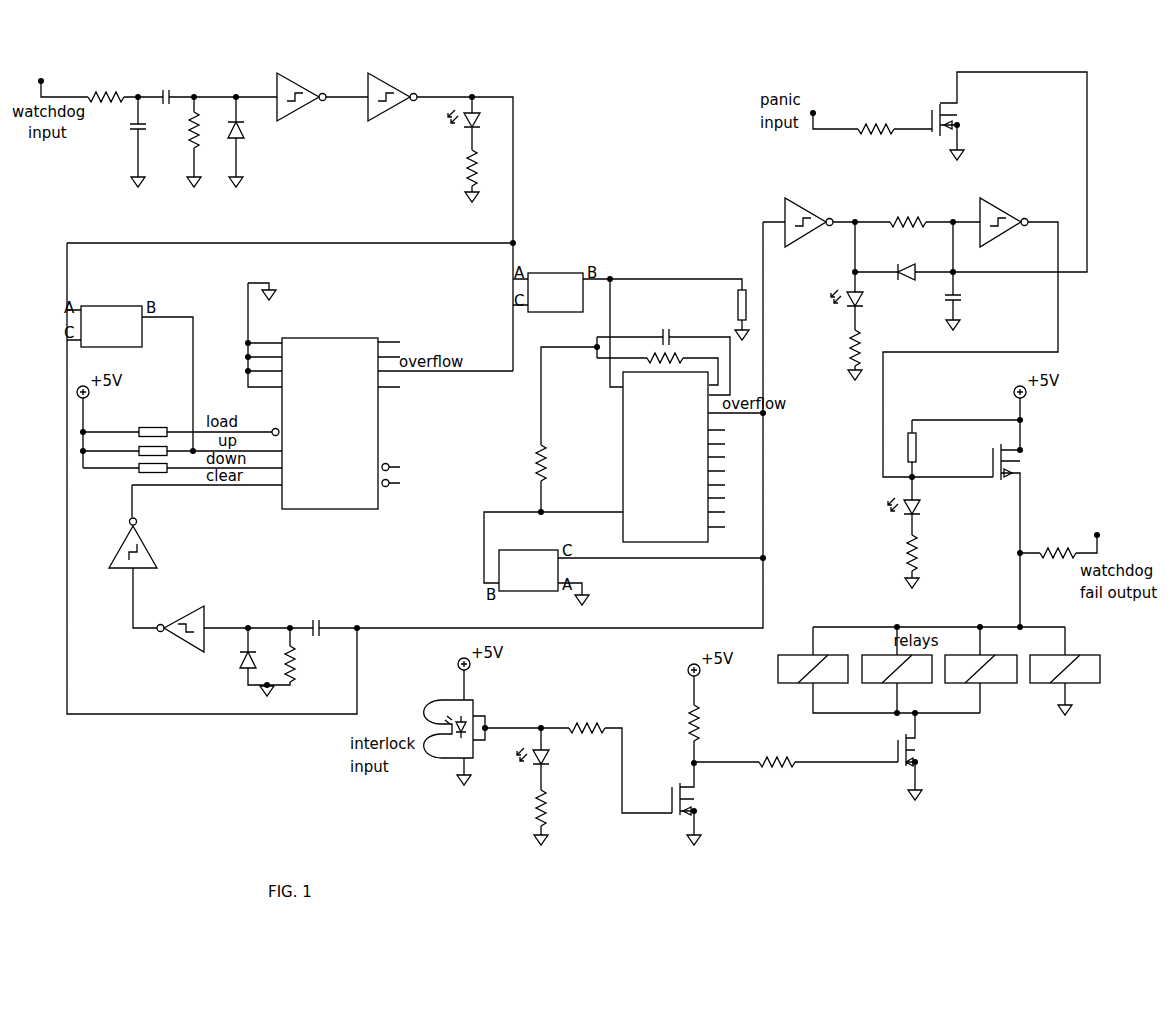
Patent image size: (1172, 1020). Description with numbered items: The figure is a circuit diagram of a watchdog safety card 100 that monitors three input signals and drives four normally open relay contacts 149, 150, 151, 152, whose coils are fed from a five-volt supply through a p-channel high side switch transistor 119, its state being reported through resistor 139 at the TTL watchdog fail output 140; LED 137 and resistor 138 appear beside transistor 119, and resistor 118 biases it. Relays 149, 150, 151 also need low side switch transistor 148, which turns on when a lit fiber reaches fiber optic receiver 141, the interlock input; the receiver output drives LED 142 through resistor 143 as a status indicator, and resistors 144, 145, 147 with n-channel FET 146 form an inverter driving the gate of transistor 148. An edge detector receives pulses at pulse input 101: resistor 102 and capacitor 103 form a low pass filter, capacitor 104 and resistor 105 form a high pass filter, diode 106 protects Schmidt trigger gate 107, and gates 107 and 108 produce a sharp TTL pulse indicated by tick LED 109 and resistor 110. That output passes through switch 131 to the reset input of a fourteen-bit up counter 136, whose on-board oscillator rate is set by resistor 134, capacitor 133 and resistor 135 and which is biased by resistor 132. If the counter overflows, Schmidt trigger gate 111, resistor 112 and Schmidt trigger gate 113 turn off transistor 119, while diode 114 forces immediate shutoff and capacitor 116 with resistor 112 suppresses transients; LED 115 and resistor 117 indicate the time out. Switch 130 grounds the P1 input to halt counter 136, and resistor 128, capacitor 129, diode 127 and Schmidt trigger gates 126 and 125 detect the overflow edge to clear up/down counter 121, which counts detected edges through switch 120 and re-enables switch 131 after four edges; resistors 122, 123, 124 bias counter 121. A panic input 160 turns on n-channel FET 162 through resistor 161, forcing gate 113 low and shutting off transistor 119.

The watchdog safety card 100 is at (205, 813).
The pulse input 101 is at (44, 74).
The resistor 102 is at (107, 88).
The capacitor 103 is at (126, 130).
The capacitor 104 is at (170, 88).
The resistor 105 is at (186, 131).
The diode 106 is at (249, 138).
The Schmidt trigger gate 107 is at (296, 113).
The Schmidt trigger gate 108 is at (391, 113).
The tick LED 109 is at (478, 123).
The resistor 110 is at (462, 168).
The Schmidt trigger gate 111 is at (783, 204).
The resistor 112 is at (907, 211).
The Schmidt trigger gate 113 is at (1015, 209).
The diode 114 is at (906, 283).
The LED 115 is at (846, 288).
The capacitor 116 is at (968, 301).
The resistor 117 is at (846, 345).
The resistor 118 is at (917, 447).
The transistor 119 is at (1022, 461).
The switch 120 is at (123, 305).
The up/down counter 121 is at (343, 337).
The resistor 122 is at (137, 437).
The resistor 123 is at (137, 453).
The resistor 124 is at (137, 483).
The Schmidt trigger gate 125 is at (112, 551).
The Schmidt trigger gate 126 is at (186, 605).
The diode 127 is at (238, 673).
The resistor 128 is at (302, 666).
The capacitor 129 is at (318, 616).
The switch 130 is at (535, 549).
The switch 131 is at (568, 272).
The resistor 132 is at (736, 303).
The capacitor 133 is at (664, 329).
The resistor 134 is at (690, 357).
The resistor 135 is at (532, 463).
The 14-bit up counter 136 is at (618, 451).
The LED 137 is at (924, 511).
The resistor 138 is at (924, 557).
The resistor 139 is at (1052, 563).
The watchdog fail output 140 is at (1100, 532).
The fiber optic receiver 141 is at (428, 698).
The LED 142 is at (548, 753).
The resistor 143 is at (548, 807).
The resistor 144 is at (588, 717).
The resistor 145 is at (706, 728).
The n-channel FET 146 is at (708, 783).
The resistor 147 is at (783, 773).
The transistor 148 is at (935, 749).
The relay contact 149 is at (790, 690).
The relay contact 150 is at (877, 690).
The relay contact 151 is at (963, 690).
The relay contact 152 is at (1048, 690).
The panic input 160 is at (822, 106).
The resistor 161 is at (875, 143).
The n-channel FET 162 is at (925, 115).